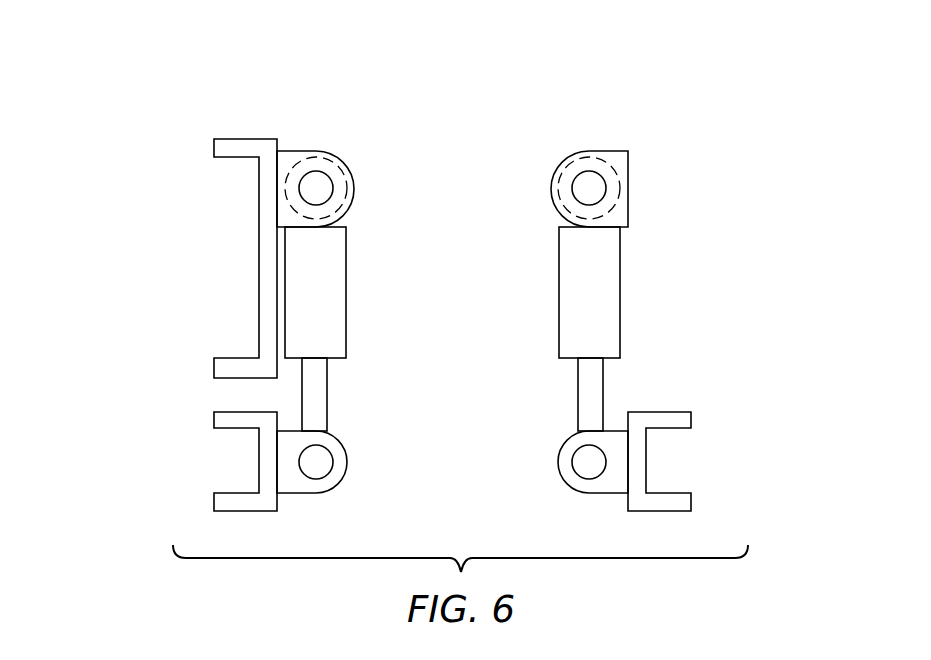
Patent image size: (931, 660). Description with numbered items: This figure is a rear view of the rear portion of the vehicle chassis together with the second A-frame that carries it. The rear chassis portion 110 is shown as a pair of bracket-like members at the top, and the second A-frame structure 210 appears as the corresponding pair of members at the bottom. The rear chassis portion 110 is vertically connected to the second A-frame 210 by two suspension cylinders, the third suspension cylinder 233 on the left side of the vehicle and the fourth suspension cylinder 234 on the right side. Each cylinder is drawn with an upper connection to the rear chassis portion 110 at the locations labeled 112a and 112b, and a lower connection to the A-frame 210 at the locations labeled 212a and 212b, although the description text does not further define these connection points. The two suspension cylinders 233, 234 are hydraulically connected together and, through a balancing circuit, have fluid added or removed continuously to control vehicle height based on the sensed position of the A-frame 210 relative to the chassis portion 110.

The rear chassis portion 110 is at (248, 141).
The first upper pivot pin 112a is at (316, 187).
The second upper pivot pin 112b is at (588, 188).
The third suspension cylinder 233 is at (333, 252).
The fourth suspension cylinder 234 is at (568, 263).
The first lower pivot pin 212a is at (316, 461).
The second lower pivot pin 212b is at (589, 462).
The second A-frame structure 210 is at (238, 496).